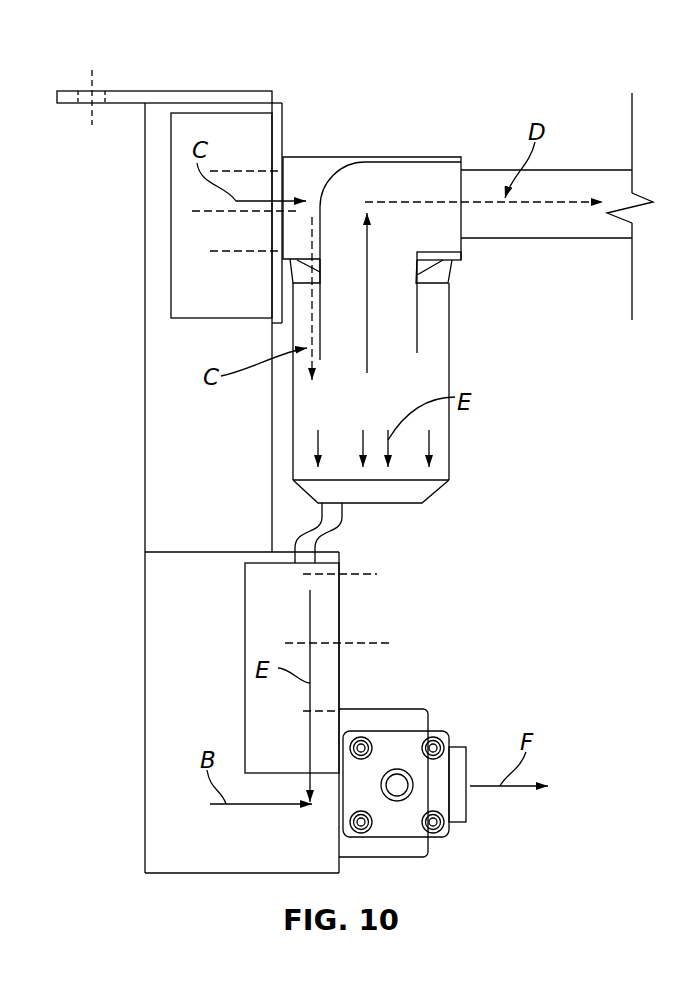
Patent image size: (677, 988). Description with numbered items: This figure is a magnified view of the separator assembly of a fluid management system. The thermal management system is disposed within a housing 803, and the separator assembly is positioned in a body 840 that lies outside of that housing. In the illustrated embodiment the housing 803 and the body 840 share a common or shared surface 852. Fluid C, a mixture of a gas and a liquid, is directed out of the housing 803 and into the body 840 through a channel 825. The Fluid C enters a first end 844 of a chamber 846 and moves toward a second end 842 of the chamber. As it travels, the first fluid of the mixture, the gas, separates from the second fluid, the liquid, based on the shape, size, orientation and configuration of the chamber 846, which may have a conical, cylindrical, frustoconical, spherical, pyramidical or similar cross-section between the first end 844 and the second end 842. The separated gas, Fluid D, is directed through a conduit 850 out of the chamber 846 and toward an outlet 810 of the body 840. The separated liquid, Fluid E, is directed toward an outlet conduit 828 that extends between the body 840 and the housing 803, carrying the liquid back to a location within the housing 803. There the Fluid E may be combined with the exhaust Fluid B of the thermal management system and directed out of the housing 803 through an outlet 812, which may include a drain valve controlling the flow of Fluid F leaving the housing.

The housing 803 is at (226, 90).
The shared surface 852 is at (287, 168).
The channel 825 is at (317, 183).
The body 840 is at (420, 153).
The first end 844 is at (447, 188).
The outlet 810 is at (603, 168).
The conduit 850 is at (427, 305).
The chamber 846 is at (450, 365).
The second end 842 is at (438, 500).
The outlet conduit 828 is at (343, 523).
The outlet 812 is at (458, 838).